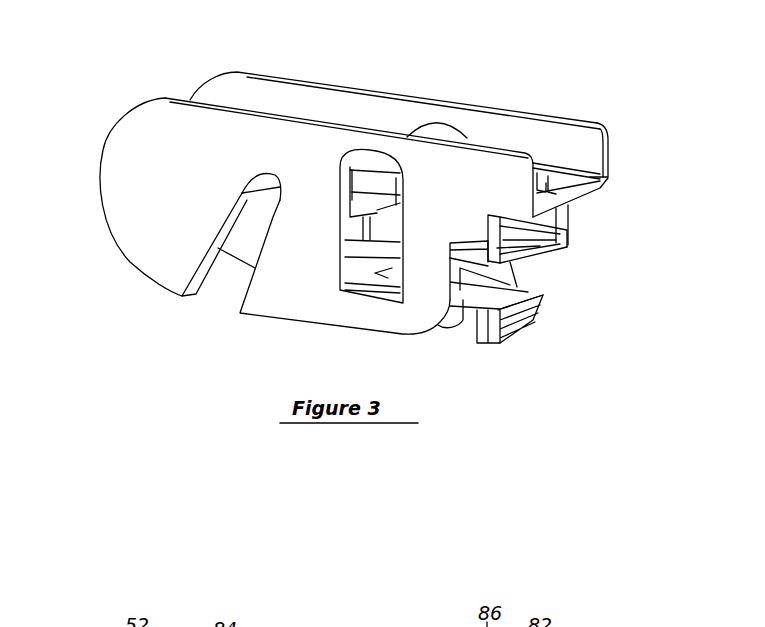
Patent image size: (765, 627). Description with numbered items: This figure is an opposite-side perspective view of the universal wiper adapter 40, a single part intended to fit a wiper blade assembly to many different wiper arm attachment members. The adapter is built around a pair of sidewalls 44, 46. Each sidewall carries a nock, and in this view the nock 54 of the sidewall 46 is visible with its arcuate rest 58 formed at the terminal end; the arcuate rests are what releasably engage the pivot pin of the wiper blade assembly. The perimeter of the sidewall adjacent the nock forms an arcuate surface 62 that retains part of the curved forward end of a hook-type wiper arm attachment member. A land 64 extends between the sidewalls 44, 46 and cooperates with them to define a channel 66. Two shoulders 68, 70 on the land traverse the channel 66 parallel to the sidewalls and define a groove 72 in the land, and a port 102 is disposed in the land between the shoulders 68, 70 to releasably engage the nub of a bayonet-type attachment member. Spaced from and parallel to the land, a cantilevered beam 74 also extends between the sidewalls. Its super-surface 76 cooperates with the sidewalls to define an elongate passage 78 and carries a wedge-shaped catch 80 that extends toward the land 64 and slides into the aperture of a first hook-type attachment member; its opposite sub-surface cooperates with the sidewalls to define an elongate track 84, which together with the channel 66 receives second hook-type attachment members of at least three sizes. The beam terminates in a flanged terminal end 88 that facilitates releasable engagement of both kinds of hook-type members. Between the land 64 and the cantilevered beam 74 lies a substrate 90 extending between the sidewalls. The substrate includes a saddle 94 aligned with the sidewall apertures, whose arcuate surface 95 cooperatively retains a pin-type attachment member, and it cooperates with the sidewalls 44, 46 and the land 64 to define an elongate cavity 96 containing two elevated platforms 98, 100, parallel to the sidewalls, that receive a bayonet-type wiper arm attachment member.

The universal wiper adapter 40 is at (118, 70).
The sidewall 44 is at (285, 78).
The sidewall 46 is at (268, 305).
The nock 54 is at (197, 303).
The arcuate rest 58 is at (257, 172).
The arcuate surface 62 is at (100, 173).
The land 64 is at (556, 178).
The channel 66 is at (618, 157).
The shoulder 68 is at (601, 178).
The shoulder 70 is at (560, 195).
The groove 72 is at (563, 186).
The cantilevered beam 74 is at (477, 312).
The super-surface 76 is at (535, 290).
The elongate passage 78 is at (538, 280).
The catch 80 is at (393, 279).
The elongate track 84 is at (446, 338).
The flanged terminal end 88 is at (538, 318).
The substrate 90 is at (546, 250).
The saddle 94 is at (378, 232).
The arcuate surface 95 is at (393, 233).
The elongate cavity 96 is at (580, 228).
The elevated platform 98 is at (530, 238).
The elevated platform 100 is at (535, 244).
The port 102 is at (543, 178).